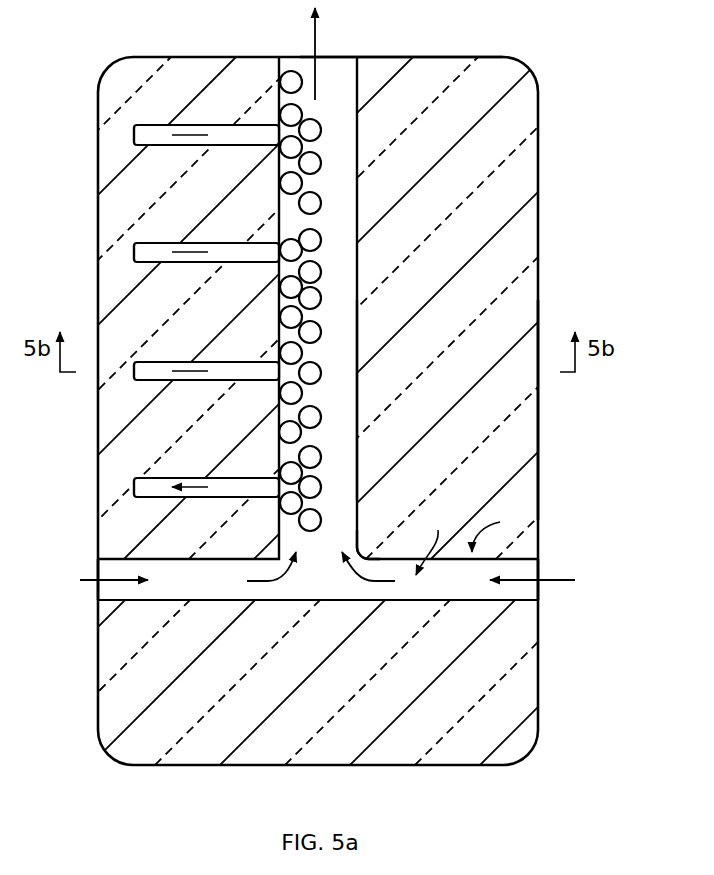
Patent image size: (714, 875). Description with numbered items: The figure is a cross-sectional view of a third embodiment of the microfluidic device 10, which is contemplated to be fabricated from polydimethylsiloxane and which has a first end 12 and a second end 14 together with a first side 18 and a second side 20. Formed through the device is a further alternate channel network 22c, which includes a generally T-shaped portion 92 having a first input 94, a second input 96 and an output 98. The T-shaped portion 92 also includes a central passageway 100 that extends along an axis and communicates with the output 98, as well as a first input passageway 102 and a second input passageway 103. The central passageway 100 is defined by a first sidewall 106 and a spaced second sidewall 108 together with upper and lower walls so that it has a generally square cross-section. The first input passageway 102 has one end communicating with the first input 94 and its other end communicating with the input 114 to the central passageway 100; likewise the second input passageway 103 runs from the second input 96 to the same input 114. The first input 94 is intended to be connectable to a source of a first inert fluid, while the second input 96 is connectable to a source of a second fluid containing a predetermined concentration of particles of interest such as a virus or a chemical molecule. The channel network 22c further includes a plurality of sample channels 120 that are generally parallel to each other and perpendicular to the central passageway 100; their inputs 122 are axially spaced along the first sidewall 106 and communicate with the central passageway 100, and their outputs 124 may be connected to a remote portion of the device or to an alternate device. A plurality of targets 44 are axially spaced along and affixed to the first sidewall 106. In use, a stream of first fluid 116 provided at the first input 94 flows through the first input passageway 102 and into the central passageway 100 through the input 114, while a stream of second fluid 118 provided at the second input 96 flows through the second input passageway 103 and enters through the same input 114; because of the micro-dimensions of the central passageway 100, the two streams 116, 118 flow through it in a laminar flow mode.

The microfluidic device 10 is at (560, 783).
The first end 12 is at (193, 766).
The second end 14 is at (438, 57).
The first side 18 is at (98, 462).
The second side 20 is at (540, 421).
The channel network 22c is at (438, 540).
The targets 44 is at (312, 163).
The T-shaped portion 92 is at (496, 526).
The first input 94 is at (97, 596).
The second input 96 is at (542, 590).
The output 98 is at (338, 57).
The central passageway 100 is at (358, 282).
The first input passageway 102 is at (196, 612).
The second input passageway 103 is at (458, 612).
The first sidewall 106 is at (288, 430).
The second sidewall 108 is at (345, 408).
The input 114 is at (355, 520).
The stream of first fluid 116 is at (80, 580).
The stream of second fluid 118 is at (570, 580).
The sample channels 120 is at (158, 125).
The inputs 122 is at (277, 123).
The outputs 124 is at (134, 135).